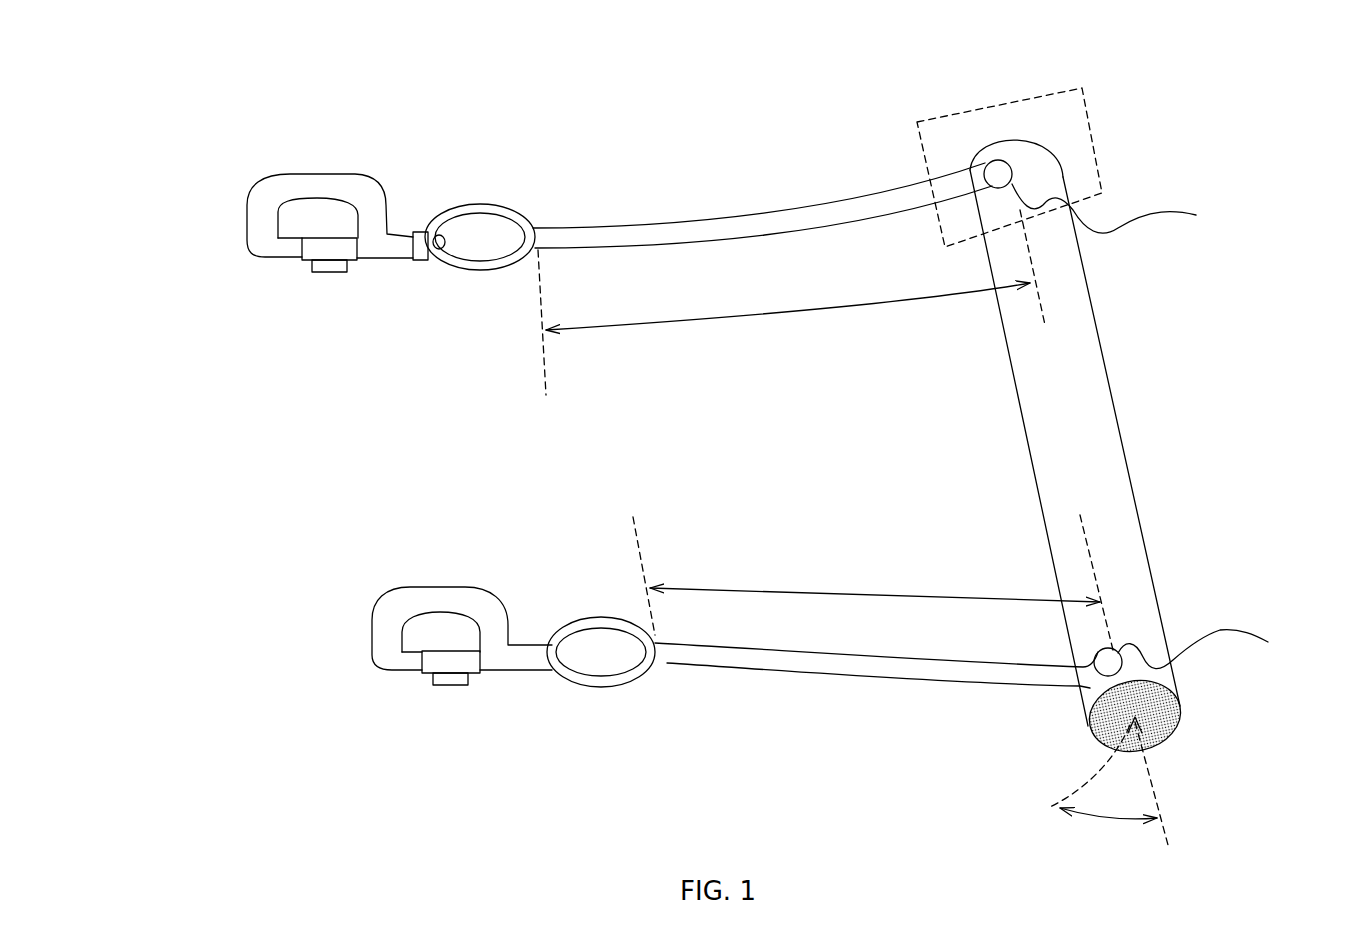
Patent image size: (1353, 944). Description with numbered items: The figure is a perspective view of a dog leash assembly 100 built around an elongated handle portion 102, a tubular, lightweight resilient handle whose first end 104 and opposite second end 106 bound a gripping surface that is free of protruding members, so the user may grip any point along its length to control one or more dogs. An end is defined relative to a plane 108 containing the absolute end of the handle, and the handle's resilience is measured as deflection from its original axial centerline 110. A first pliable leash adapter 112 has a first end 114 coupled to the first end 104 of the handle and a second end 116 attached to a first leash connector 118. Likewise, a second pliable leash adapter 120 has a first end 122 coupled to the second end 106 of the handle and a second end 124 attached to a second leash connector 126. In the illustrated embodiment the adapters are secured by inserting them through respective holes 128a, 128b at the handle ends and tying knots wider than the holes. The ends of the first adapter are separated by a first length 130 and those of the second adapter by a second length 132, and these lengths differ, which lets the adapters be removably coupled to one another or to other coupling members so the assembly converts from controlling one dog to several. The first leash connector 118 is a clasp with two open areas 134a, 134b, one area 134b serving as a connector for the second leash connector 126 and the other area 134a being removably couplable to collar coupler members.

The dog leash assembly 100 is at (325, 553).
The elongated handle portion 102 is at (1092, 458).
The first end of handle portion 104 is at (992, 122).
The second end of handle portion 106 is at (1200, 731).
The plane 108 is at (1035, 110).
The original axial centerline 110 is at (1100, 812).
The first pliable leash adapter 112 is at (802, 220).
The first end of first pliable leash adapter 114 is at (955, 163).
The second end of first pliable leash adapter 116 is at (533, 211).
The first leash connector 118 is at (360, 193).
The second pliable leash adapter 120 is at (777, 665).
The first end of second pliable leash adapter 122 is at (1085, 690).
The second end of second pliable leash adapter 124 is at (660, 688).
The second leash connector 126 is at (515, 663).
The hole 128a is at (1128, 196).
The hole 128b is at (1216, 653).
The first length 130 is at (757, 315).
The second length 132 is at (885, 595).
The open area of clasp 134a is at (312, 218).
The open area of clasp 134b is at (480, 244).